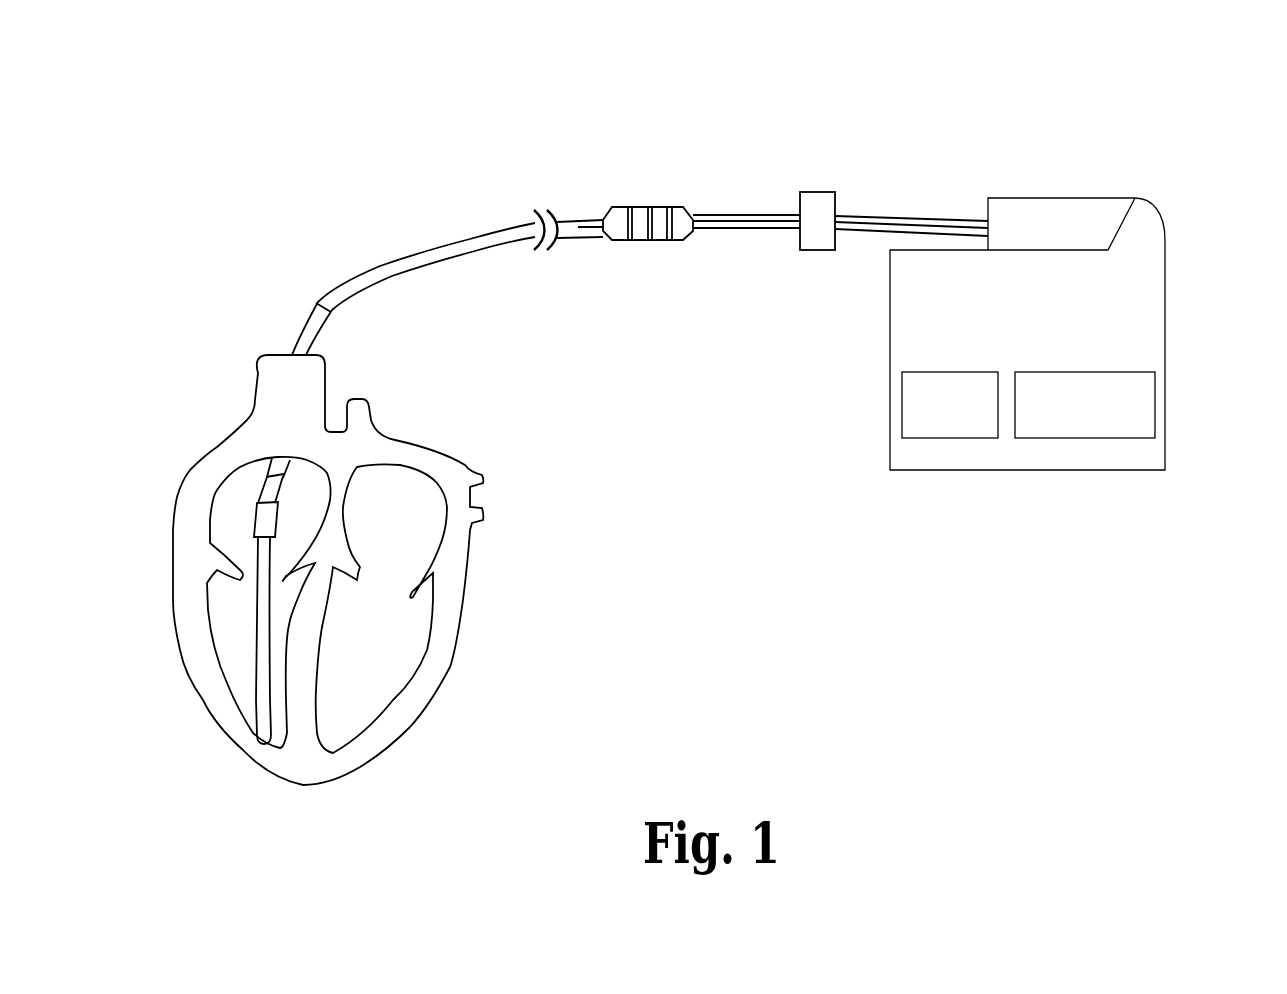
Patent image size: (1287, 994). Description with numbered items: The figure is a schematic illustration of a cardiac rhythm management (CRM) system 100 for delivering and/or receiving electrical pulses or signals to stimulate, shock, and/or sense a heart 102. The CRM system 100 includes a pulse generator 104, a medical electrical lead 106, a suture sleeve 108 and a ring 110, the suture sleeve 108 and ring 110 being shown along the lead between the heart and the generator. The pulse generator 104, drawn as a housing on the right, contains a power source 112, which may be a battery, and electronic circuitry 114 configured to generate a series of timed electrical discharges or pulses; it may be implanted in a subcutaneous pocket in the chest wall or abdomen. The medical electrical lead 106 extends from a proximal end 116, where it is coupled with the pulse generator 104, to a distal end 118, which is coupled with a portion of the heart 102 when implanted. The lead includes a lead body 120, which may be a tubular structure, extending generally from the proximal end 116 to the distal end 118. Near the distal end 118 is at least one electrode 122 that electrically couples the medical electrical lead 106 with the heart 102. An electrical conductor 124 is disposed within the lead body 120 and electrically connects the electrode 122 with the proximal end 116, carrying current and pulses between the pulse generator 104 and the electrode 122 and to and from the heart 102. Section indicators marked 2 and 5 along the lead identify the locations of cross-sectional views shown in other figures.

The cardiac rhythm management (CRM) system 100 is at (1176, 122).
The heart 102 is at (198, 470).
The pulse generator 104 is at (1167, 265).
The medical electrical lead 106 is at (364, 259).
The suture sleeve 108 is at (645, 206).
The ring 110 is at (823, 192).
The power source 112 is at (902, 405).
The electronic circuitry 114 is at (1165, 405).
The proximal end 116 is at (950, 220).
The distal end 118 is at (258, 737).
The lead body 120 is at (427, 268).
The electrode 122 is at (257, 513).
The electrical conductor 124 is at (480, 240).
The section line for Fig. 2 is at (578, 227).
The section line for Fig. 5 is at (777, 221).